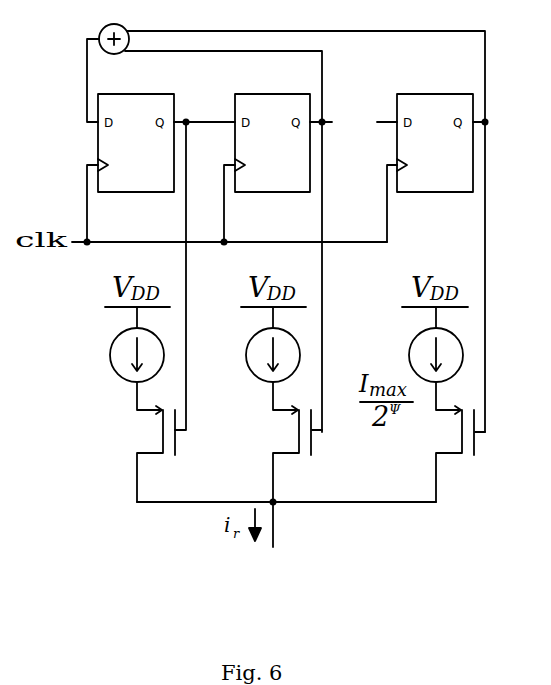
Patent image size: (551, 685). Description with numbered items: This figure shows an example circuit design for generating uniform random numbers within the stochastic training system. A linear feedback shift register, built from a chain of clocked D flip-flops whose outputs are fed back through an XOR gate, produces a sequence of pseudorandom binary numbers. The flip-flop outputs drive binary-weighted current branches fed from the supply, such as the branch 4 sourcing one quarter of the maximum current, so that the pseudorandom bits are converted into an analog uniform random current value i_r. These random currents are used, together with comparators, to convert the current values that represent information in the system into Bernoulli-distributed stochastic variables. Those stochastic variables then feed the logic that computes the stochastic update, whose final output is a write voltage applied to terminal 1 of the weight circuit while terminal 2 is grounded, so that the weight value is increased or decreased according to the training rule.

The terminal 1 is at (122, 39).
The terminal 2 is at (118, 402).
The second current source branch (Imax/4) 4 is at (253, 402).